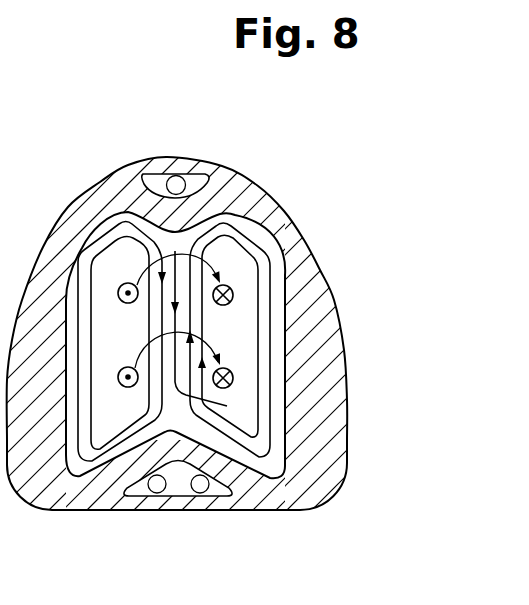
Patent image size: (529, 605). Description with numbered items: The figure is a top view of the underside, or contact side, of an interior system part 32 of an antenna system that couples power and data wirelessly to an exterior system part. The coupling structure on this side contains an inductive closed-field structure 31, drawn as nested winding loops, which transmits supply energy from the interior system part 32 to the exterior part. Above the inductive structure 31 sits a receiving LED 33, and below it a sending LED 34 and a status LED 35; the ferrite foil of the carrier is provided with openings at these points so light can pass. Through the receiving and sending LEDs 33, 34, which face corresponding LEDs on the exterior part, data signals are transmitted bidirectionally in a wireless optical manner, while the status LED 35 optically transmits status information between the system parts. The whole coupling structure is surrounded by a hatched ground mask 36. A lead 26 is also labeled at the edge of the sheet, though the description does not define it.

The lead wire 26 is at (0, 0).
The inductive closed-field structure 31 is at (250, 237).
The interior system part 32 is at (328, 263).
The receiving LED 33 is at (180, 183).
The sending LED 34 is at (201, 494).
The status LED 35 is at (156, 494).
The ground mask 36 is at (323, 368).